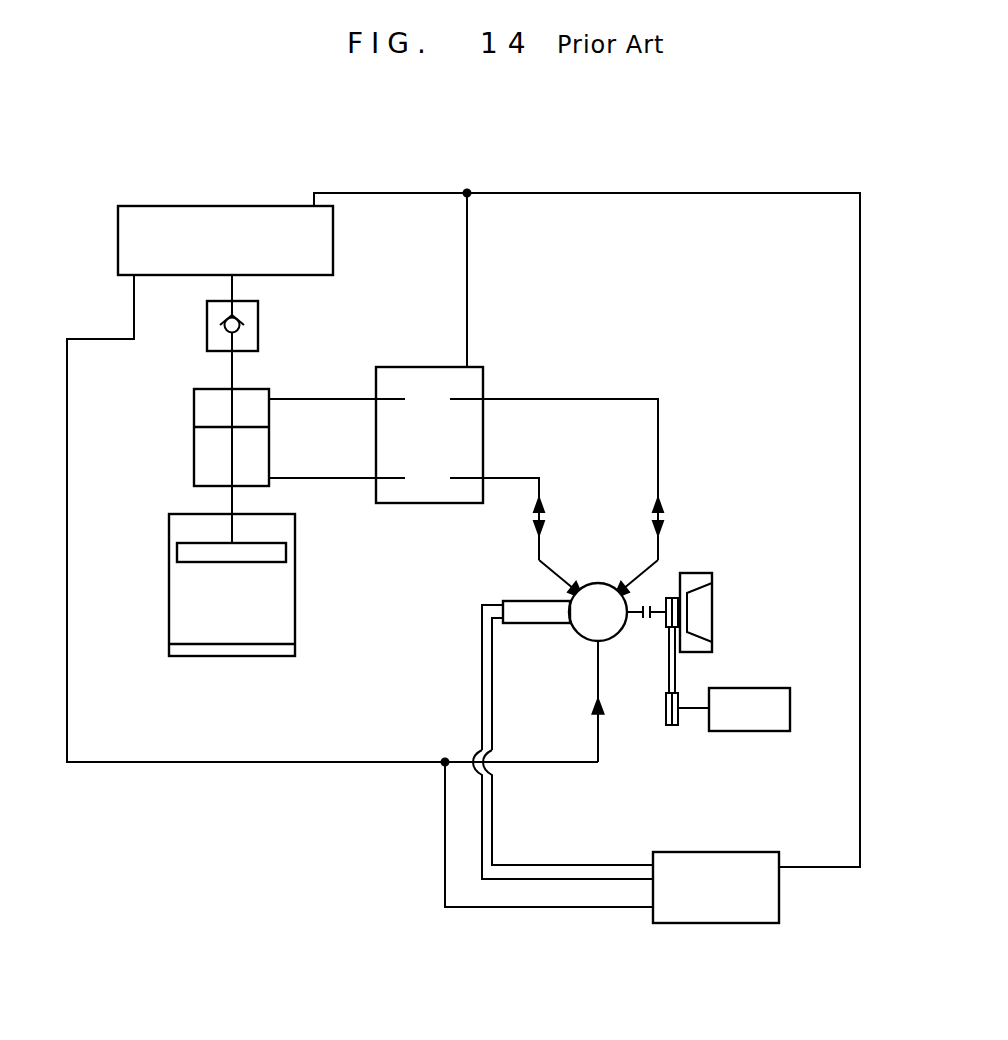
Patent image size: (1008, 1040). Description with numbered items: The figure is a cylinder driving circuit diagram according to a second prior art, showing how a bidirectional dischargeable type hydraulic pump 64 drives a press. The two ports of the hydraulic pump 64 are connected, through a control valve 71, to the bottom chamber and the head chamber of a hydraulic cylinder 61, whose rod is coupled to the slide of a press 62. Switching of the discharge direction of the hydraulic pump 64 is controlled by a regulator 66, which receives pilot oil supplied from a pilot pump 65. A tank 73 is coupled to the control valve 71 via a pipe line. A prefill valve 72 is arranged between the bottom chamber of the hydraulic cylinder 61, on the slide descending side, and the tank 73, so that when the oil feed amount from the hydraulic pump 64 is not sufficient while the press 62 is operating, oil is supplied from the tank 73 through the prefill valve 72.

The hydraulic cylinder 61 is at (194, 410).
The press 62 is at (169, 590).
The bidirectional dischargeable type hydraulic pump 64 is at (578, 640).
The pilot pump 65 is at (714, 852).
The regulator 66 is at (520, 601).
The control valve 71 is at (405, 367).
The prefill valve 72 is at (258, 318).
The tank 73 is at (173, 206).